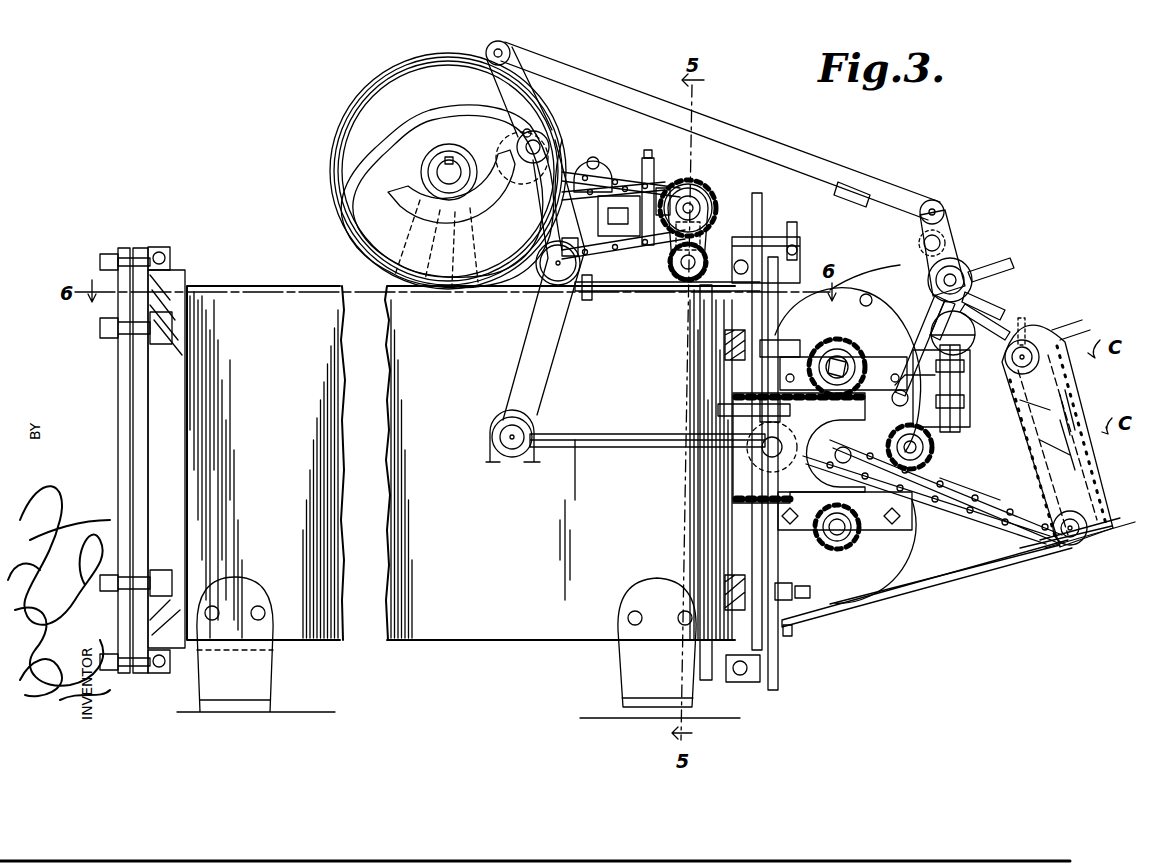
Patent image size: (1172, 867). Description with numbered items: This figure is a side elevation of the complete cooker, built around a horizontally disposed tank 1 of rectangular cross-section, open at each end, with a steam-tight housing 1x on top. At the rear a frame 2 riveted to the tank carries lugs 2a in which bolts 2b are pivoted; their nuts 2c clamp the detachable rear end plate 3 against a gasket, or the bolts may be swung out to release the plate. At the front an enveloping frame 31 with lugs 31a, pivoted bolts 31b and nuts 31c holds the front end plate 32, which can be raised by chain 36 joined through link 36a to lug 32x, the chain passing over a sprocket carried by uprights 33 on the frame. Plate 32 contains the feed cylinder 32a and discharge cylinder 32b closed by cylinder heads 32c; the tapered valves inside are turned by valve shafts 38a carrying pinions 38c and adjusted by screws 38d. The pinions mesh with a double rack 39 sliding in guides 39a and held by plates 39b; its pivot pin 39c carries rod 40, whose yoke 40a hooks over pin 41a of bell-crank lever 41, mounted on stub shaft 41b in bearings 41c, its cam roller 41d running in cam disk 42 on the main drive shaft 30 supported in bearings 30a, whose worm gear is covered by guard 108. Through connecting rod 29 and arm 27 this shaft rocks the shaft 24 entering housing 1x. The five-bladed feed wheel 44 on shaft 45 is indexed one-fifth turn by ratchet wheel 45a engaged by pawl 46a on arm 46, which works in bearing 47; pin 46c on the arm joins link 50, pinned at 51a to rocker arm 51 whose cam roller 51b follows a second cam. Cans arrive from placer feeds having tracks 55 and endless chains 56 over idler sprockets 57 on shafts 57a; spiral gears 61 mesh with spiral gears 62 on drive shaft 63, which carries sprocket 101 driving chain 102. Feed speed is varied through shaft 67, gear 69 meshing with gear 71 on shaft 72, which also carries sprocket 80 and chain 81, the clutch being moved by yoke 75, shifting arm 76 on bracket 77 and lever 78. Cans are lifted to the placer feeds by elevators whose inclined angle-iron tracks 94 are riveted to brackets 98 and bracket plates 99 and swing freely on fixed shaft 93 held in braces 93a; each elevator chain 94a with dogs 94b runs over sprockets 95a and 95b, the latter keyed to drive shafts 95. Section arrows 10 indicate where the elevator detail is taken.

The tank 1 is at (300, 292).
The steam-tight housing 1x is at (575, 222).
The frame 2 is at (144, 460).
The lugs 2a is at (175, 260).
The bolts 2b is at (105, 252).
The nuts 2c is at (115, 252).
The rear end plate 3 is at (128, 462).
The direction arrow 10 is at (1114, 512).
The rocker shaft 24 is at (612, 224).
The arm 27 is at (612, 172).
The connecting rod 29 is at (566, 150).
The main drive shaft 30 is at (440, 172).
The bearings 30a is at (425, 222).
The enveloping frame 31 is at (725, 666).
The lugs 31a is at (735, 330).
The bolts 31b is at (728, 404).
The nuts 31c is at (800, 600).
The front end plate 32 is at (640, 242).
The feed cylinder 32a is at (975, 330).
The discharge cylinder 32b is at (895, 578).
The cylinder heads 32c is at (866, 293).
The lug 32x is at (848, 270).
The uprights 33 is at (766, 212).
The chain 36 is at (845, 185).
The link 36a is at (800, 240).
The valve shaft 38a is at (800, 345).
The pinions 38c is at (850, 350).
The valve adjusting screws 38d is at (830, 548).
The double rack 39 is at (724, 480).
The guides 39a is at (812, 398).
The plates 39b is at (845, 511).
The pivot pin 39c is at (772, 458).
The rod 40 is at (560, 434).
The yoke 40a is at (495, 460).
The bell-crank lever 41 is at (522, 362).
The pin 41a is at (505, 430).
The stub shaft 41b is at (540, 282).
The bearings 41c is at (587, 300).
The cam roller 41d is at (527, 133).
The cam disk 42 is at (374, 158).
The feed wheel 44 is at (1010, 268).
The shaft 45 is at (955, 272).
The ratchet wheel 45a is at (975, 300).
The arm 46 is at (945, 232).
The pawl 46a is at (975, 262).
The pin 46c is at (934, 204).
The bearing 47 is at (905, 330).
The link 50 is at (790, 158).
The rocker arm 51 is at (498, 94).
The pin 51a is at (515, 54).
The cam roller 51b is at (506, 150).
The can tracks 55 is at (952, 333).
The feed chains 56 is at (930, 430).
The idler sprockets 57 is at (962, 378).
The shafts 57a is at (909, 376).
The spiral gears 61 is at (960, 410).
The spiral gears 62 is at (925, 462).
The drive shaft 63 is at (842, 450).
The shaft 67 is at (684, 276).
The gear 69 is at (708, 250).
The gear 71 is at (714, 196).
The shaft 72 is at (705, 192).
The yoke 75 is at (662, 190).
The shifting arm 76 is at (646, 160).
The bracket 77 is at (650, 291).
The clutch shifting lever 78 is at (648, 150).
The sprocket 80 is at (688, 196).
The chain 81 is at (592, 156).
The shaft 93 is at (1075, 545).
The braces 93a is at (972, 572).
The tracks 94 is at (1082, 411).
The endless chain 94a is at (1080, 458).
The dogs 94b is at (1094, 412).
The drive shafts 95 is at (1030, 345).
The sprockets 95a is at (1070, 500).
The sprockets 95b is at (796, 636).
The brackets 98 is at (1112, 530).
The bracket plates 99 is at (1040, 350).
The sprocket 101 is at (978, 465).
The chain 102 is at (1000, 476).
The guard 108 is at (405, 80).